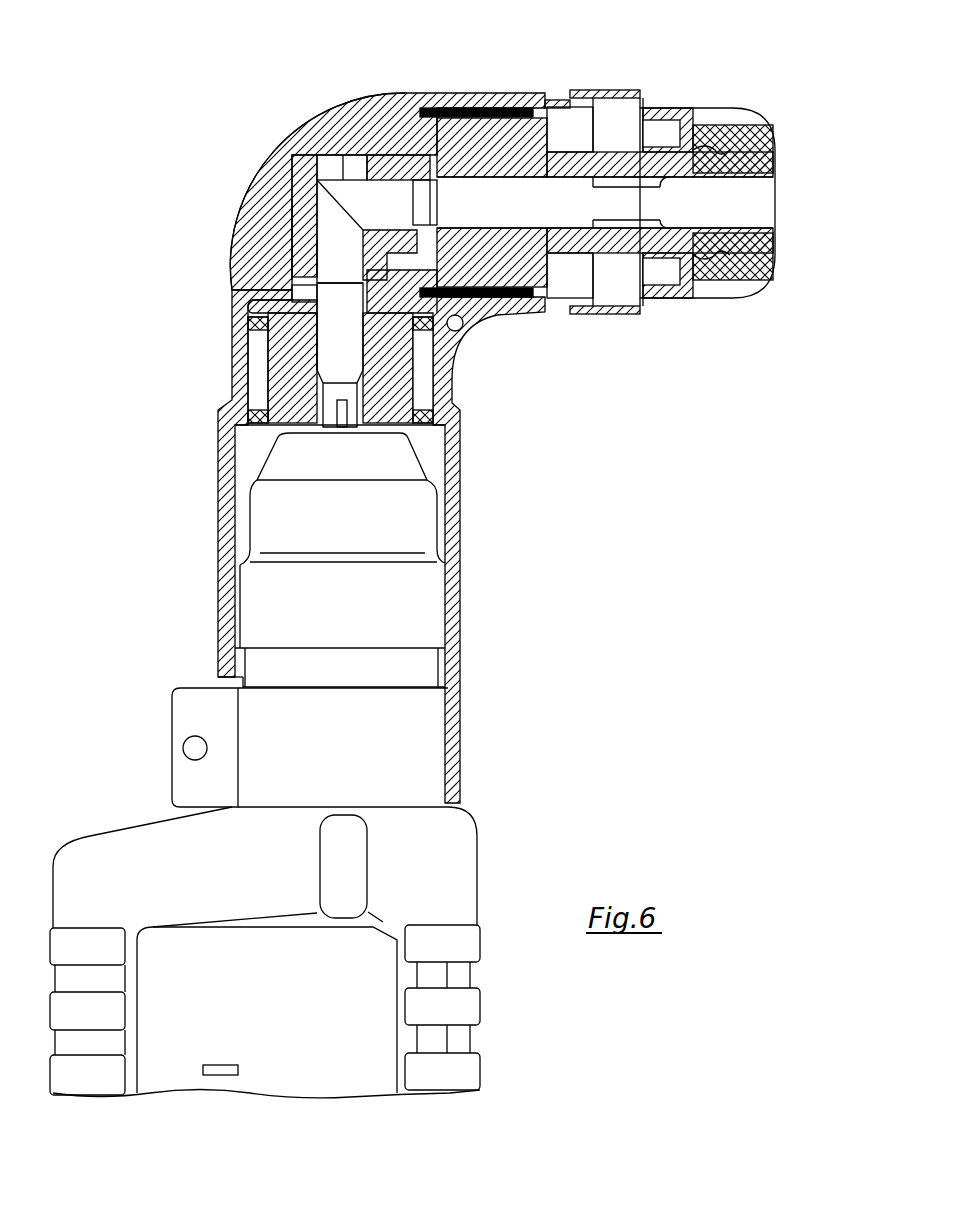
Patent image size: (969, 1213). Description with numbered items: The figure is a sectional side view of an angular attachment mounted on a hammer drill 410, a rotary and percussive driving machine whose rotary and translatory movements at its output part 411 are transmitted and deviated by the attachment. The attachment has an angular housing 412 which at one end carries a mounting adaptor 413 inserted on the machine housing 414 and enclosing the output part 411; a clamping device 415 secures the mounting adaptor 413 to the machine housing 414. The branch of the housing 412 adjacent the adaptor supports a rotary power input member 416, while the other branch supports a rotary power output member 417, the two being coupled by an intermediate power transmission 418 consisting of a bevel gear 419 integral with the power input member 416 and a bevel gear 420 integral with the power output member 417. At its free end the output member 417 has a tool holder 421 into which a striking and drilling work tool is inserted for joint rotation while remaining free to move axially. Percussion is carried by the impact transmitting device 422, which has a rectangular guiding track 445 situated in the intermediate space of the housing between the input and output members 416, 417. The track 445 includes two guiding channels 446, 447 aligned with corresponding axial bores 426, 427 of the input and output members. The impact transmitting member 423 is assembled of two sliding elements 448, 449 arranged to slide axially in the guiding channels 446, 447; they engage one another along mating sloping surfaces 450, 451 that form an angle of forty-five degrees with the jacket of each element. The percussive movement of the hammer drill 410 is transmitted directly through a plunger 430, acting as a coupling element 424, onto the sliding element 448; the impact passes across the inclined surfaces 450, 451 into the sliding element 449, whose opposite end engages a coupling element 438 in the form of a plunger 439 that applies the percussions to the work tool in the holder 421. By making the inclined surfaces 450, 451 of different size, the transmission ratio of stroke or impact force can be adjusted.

The hammer drill 410 is at (294, 1022).
The output part 411 is at (400, 530).
The angular housing 412 is at (320, 128).
The mounting adaptor 413 is at (440, 462).
The machine housing 414 is at (450, 873).
The clamping device 415 is at (198, 707).
The power input member 416 is at (282, 398).
The power output member 417 is at (475, 160).
The intermediate power transmission 418 is at (445, 313).
The bevel gear 419 is at (260, 290).
The bevel gear 420 is at (417, 100).
The tool holder 421 is at (765, 203).
The impact transmitting device 422 is at (333, 145).
The impact transmitting member 423 is at (305, 226).
The coupling element 424 is at (258, 365).
The axial bore 426 is at (290, 336).
The axial bore 427 is at (567, 200).
The plunger 430 is at (322, 352).
The coupling element 438 is at (505, 195).
The plunger 439 is at (520, 230).
The rectangular guiding track 445 is at (300, 163).
The guiding channel 446 is at (253, 317).
The guiding channel 447 is at (468, 328).
The sliding element 448 is at (327, 255).
The sliding element 449 is at (367, 203).
The sloping surface 450 is at (330, 212).
The sloping surface 451 is at (303, 128).